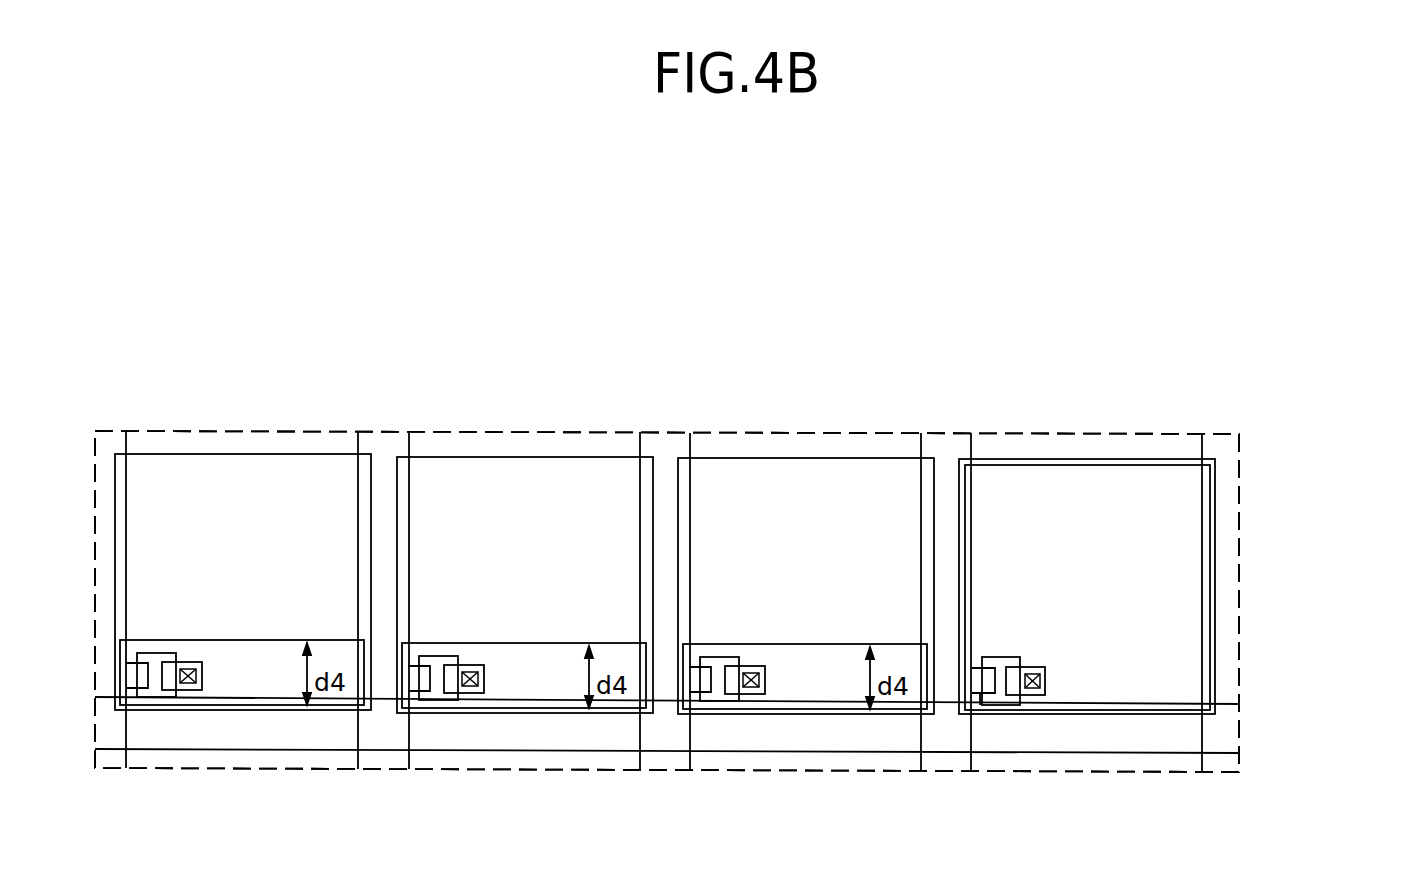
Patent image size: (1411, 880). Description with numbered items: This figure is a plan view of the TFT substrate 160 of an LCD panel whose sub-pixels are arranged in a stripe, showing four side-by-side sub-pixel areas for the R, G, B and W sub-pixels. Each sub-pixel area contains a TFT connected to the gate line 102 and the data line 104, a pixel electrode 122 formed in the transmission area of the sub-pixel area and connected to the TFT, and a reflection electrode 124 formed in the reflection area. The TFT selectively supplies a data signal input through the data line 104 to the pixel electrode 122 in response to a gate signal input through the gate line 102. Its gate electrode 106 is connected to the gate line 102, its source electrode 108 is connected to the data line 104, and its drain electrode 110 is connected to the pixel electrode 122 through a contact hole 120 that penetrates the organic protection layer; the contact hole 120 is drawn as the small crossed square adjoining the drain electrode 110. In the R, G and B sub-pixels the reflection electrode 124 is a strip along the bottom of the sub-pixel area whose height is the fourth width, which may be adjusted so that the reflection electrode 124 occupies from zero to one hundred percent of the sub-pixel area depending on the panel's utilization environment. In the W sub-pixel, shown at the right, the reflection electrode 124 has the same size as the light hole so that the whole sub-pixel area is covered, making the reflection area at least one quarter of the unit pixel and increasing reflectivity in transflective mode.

The gate line 102 is at (1237, 729).
The data line 104 is at (663, 772).
The gate electrode 106 is at (1003, 657).
The source electrode 108 is at (973, 710).
The drain electrode 110 is at (1032, 695).
The contact hole 120 is at (1045, 681).
The pixel electrode 122 is at (243, 460).
The reflection electrode 124 is at (243, 640).
The TFT substrate 160 is at (1280, 481).